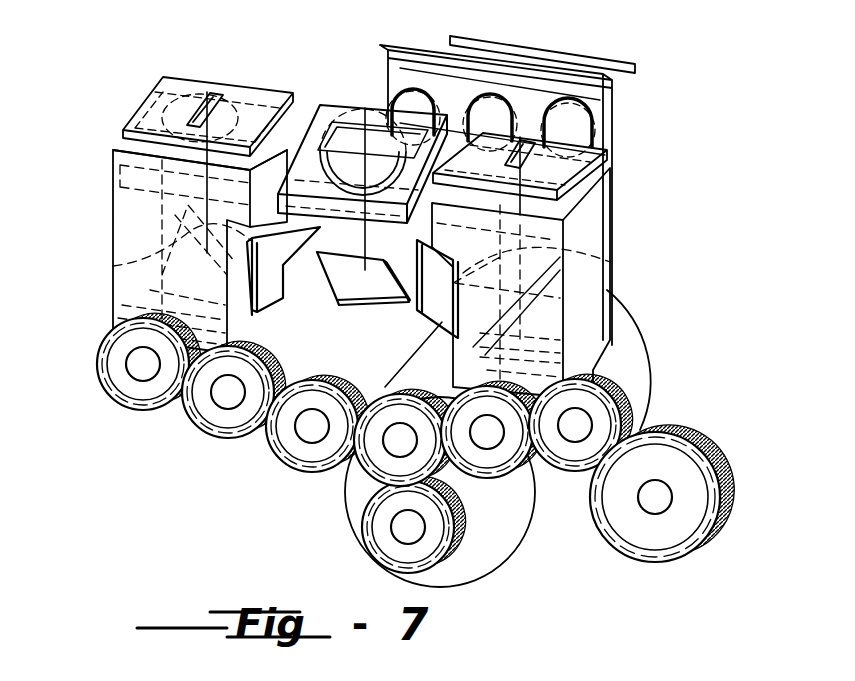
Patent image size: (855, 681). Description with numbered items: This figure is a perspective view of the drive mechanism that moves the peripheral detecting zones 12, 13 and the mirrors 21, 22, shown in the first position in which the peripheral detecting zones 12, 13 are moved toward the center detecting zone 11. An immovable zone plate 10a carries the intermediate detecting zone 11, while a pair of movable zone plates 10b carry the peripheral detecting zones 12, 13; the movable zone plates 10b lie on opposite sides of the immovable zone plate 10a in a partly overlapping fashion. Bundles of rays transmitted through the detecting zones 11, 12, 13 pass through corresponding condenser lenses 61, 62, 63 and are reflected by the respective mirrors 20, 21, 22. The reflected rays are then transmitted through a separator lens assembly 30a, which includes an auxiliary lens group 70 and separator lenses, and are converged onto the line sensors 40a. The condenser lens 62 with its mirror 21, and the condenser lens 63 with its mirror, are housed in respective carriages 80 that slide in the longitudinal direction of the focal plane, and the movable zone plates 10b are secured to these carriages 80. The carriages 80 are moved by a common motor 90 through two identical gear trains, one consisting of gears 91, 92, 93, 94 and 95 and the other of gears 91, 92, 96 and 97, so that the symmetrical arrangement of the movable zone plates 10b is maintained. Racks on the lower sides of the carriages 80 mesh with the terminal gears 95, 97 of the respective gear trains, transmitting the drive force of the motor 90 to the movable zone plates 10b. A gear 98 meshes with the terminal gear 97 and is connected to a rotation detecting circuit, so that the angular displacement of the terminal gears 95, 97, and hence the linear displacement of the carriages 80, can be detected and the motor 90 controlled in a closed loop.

The immovable zone plate 10a is at (322, 103).
The movable zone plates 10b is at (152, 90).
The intermediate detecting zone 11 is at (340, 122).
The peripheral detecting zone 12 is at (160, 112).
The peripheral detecting zone 13 is at (518, 140).
The mirror 20 is at (357, 300).
The mirror 21 is at (113, 266).
The mirror 22 is at (282, 300).
The separator lens assembly 30a is at (618, 106).
The line sensors 40a is at (647, 62).
The condenser lens 61 is at (378, 82).
The condenser lens 62 is at (222, 86).
The condenser lens 63 is at (612, 183).
The auxiliary lens group 70 is at (388, 60).
The carriages 80 is at (113, 210).
The motor 90 is at (510, 565).
The gear 91 is at (380, 527).
The gear 92 is at (345, 487).
The gear 93 is at (295, 453).
The gear 94 is at (215, 418).
The terminal gear 95 is at (100, 352).
The gear 96 is at (598, 468).
The terminal gear 97 is at (630, 412).
The gear 98 is at (643, 545).